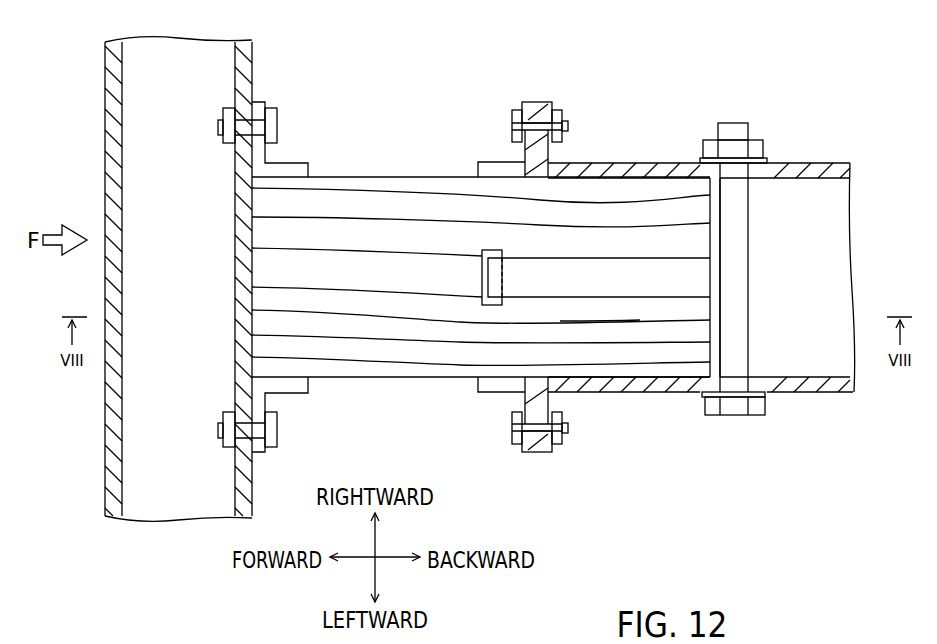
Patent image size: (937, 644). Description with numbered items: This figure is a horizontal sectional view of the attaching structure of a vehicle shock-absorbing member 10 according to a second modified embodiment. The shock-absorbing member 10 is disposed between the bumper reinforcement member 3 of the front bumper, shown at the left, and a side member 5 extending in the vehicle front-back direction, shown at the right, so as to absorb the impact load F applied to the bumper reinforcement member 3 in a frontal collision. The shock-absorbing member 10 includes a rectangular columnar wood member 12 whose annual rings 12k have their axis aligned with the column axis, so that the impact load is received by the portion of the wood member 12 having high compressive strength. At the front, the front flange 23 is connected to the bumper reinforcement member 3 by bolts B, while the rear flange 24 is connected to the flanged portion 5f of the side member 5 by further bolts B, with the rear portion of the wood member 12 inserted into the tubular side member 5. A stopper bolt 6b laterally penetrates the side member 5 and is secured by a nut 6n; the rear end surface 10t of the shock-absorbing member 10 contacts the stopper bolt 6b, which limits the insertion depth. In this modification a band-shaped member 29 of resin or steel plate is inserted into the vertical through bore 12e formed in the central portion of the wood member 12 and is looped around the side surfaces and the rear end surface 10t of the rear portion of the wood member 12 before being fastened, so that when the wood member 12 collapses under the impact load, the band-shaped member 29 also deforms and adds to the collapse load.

The bumper reinforcement member 3 is at (100, 172).
The side member 5 is at (803, 160).
The flanged portion 5f is at (545, 105).
The nut 6n is at (730, 125).
The stopper bolt 6b is at (733, 370).
The shock-absorbing member 10 is at (431, 122).
The rear end surface 10t is at (720, 236).
The wood member 12 is at (405, 240).
The through bore 12e is at (487, 275).
The annual rings 12k is at (636, 332).
The front flange 23 is at (264, 399).
The rear flange 24 is at (528, 158).
The band-shaped member 29 is at (625, 265).
The bolt B is at (280, 127).